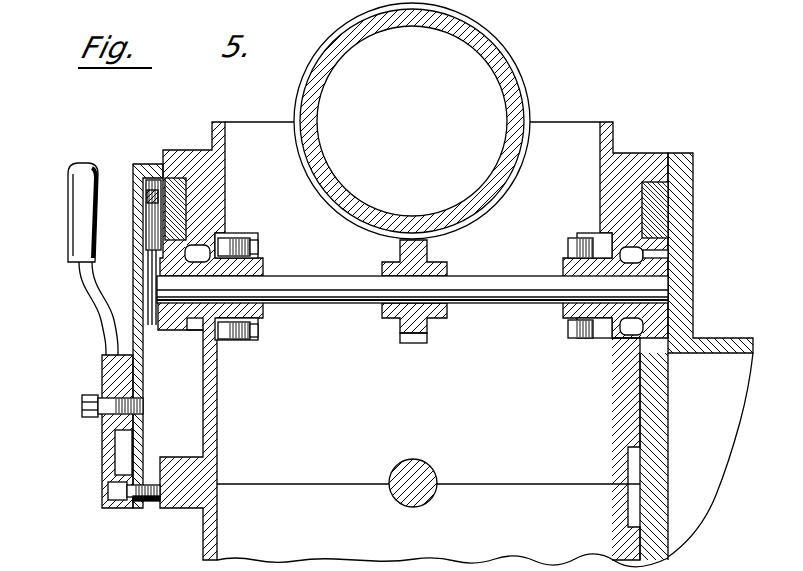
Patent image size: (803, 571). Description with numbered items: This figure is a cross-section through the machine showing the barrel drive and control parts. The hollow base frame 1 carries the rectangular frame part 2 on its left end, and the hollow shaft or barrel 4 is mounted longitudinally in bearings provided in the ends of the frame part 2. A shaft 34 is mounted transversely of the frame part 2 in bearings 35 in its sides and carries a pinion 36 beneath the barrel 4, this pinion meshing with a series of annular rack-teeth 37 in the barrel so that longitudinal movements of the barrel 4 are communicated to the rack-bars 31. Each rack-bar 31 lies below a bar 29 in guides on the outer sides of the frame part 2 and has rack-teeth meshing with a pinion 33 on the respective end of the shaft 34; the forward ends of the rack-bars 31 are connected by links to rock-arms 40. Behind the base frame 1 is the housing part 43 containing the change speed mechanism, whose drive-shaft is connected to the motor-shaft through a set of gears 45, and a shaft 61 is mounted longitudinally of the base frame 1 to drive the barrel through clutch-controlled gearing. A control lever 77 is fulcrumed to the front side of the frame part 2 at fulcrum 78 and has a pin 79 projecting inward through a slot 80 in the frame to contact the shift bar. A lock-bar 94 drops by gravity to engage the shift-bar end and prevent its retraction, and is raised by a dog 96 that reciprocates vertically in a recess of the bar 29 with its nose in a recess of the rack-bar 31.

The hollow base frame 1 is at (442, 525).
The rectangular frame part 2 is at (218, 405).
The hollow shaft or barrel 4 is at (497, 91).
The bars 29 is at (177, 188).
The rack-bar 31 is at (162, 251).
The pinion 33 is at (182, 317).
The shaft 34 is at (353, 295).
The bearings 35 is at (262, 270).
The pinion 36 is at (428, 332).
The annular rack-teeth 37 is at (466, 19).
The rock-arms 40 is at (125, 4).
The housing part 43 is at (682, 356).
The set of gears 45 is at (155, 192).
The shaft 61 is at (422, 477).
The control lever 77 is at (92, 321).
The fulcrum 78 is at (103, 425).
The pin 79 is at (133, 504).
The slot 80 is at (144, 503).
The lock-bar 94 is at (150, 285).
The dog 96 is at (158, 225).